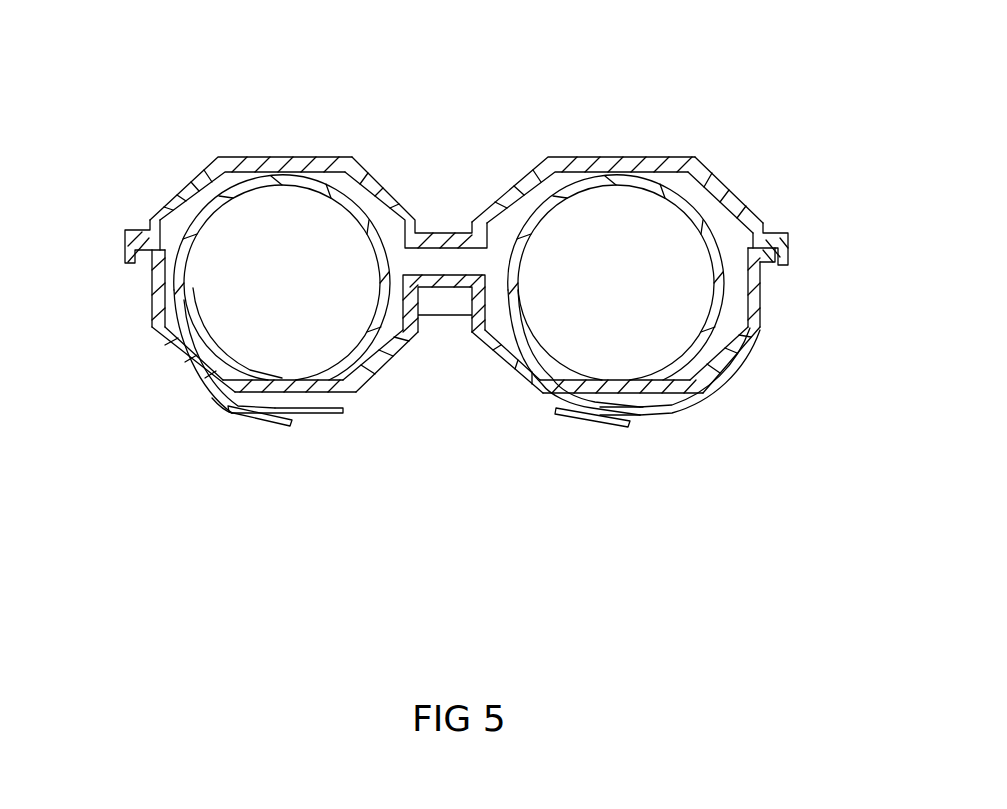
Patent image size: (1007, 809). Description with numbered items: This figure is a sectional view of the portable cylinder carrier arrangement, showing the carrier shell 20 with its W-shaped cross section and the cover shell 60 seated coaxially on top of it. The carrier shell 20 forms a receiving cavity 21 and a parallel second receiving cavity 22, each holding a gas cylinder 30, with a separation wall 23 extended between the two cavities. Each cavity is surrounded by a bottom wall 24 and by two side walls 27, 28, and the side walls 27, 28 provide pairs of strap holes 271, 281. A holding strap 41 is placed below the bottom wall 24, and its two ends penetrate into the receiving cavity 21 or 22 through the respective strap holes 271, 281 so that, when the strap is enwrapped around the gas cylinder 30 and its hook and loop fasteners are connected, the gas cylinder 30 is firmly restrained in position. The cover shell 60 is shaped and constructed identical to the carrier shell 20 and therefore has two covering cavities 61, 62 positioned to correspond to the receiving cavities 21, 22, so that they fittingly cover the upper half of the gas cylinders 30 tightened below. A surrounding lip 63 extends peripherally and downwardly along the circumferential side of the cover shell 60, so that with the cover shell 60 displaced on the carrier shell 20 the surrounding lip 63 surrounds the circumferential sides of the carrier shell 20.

The carrier shell 20 is at (525, 364).
The receiving cavity 21 is at (358, 354).
The second receiving cavity 22 is at (549, 374).
The separation wall 23 is at (437, 306).
The bottom wall 24 is at (274, 426).
The side wall 27 is at (407, 339).
The strap hole 271 is at (170, 353).
The side wall 28 is at (337, 393).
The strap hole 281 is at (352, 380).
The gas cylinder 30 is at (283, 215).
The holding strap 41 is at (224, 417).
The cover shell 60 is at (482, 139).
The covering cavity 61 is at (200, 153).
The covering cavity 62 is at (549, 154).
The surrounding lip 63 is at (128, 242).